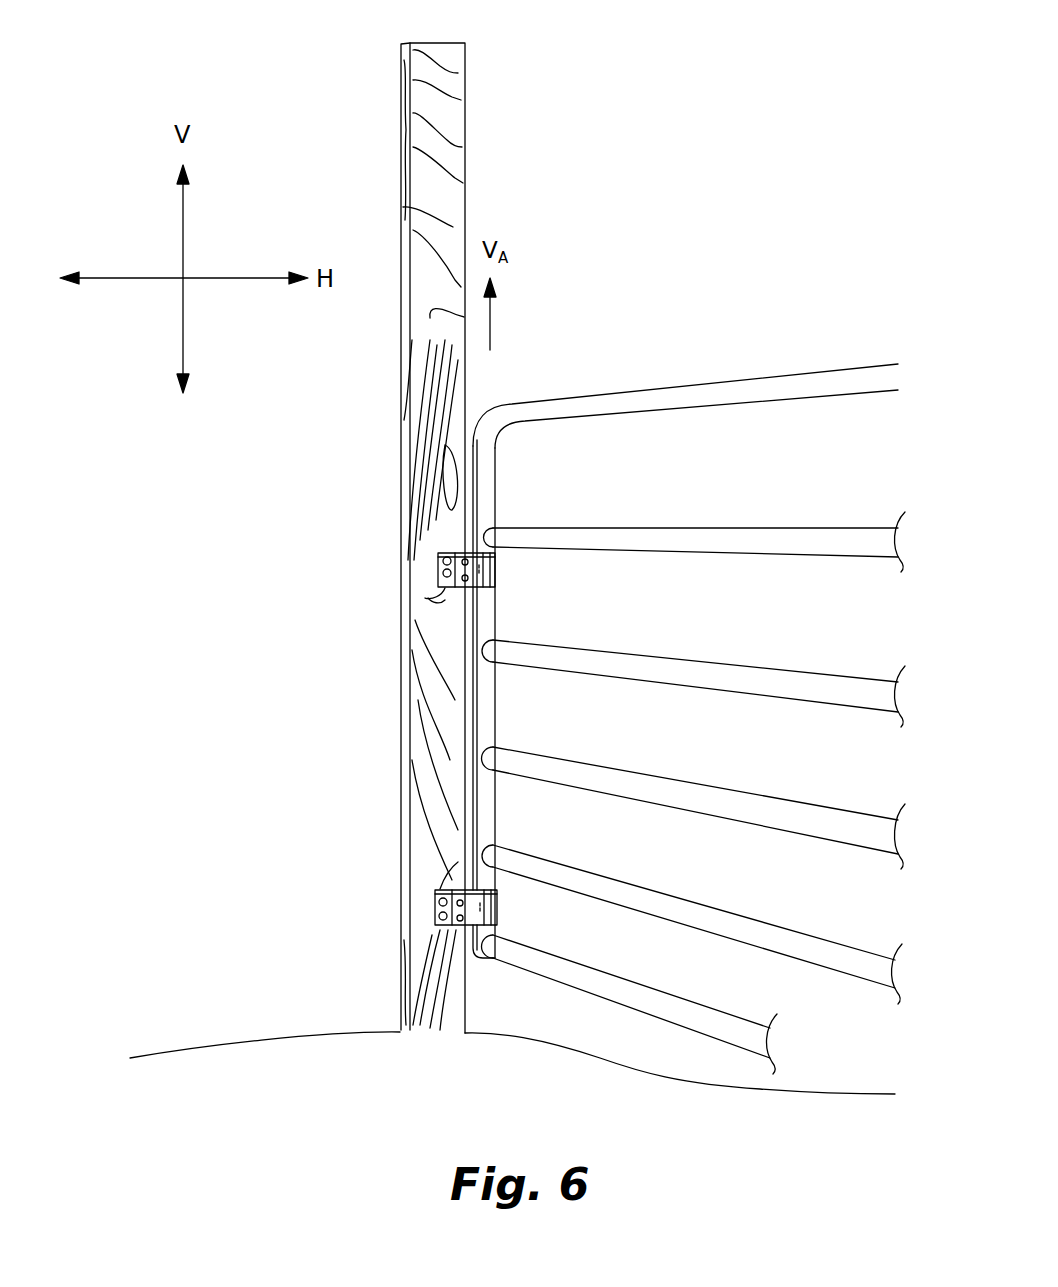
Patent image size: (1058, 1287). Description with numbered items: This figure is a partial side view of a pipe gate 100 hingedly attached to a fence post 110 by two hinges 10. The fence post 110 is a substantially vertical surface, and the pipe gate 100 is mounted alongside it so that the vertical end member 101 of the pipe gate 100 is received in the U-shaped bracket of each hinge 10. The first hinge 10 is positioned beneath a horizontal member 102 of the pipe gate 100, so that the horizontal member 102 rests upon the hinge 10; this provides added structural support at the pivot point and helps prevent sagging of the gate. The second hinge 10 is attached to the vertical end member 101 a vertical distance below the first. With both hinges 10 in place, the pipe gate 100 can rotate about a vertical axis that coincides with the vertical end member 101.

The hinge 10 is at (482, 590).
The pipe gate 100 is at (689, 691).
The vertical end member 101 is at (497, 711).
The horizontal member 102 is at (568, 527).
The fence post 110 is at (462, 126).